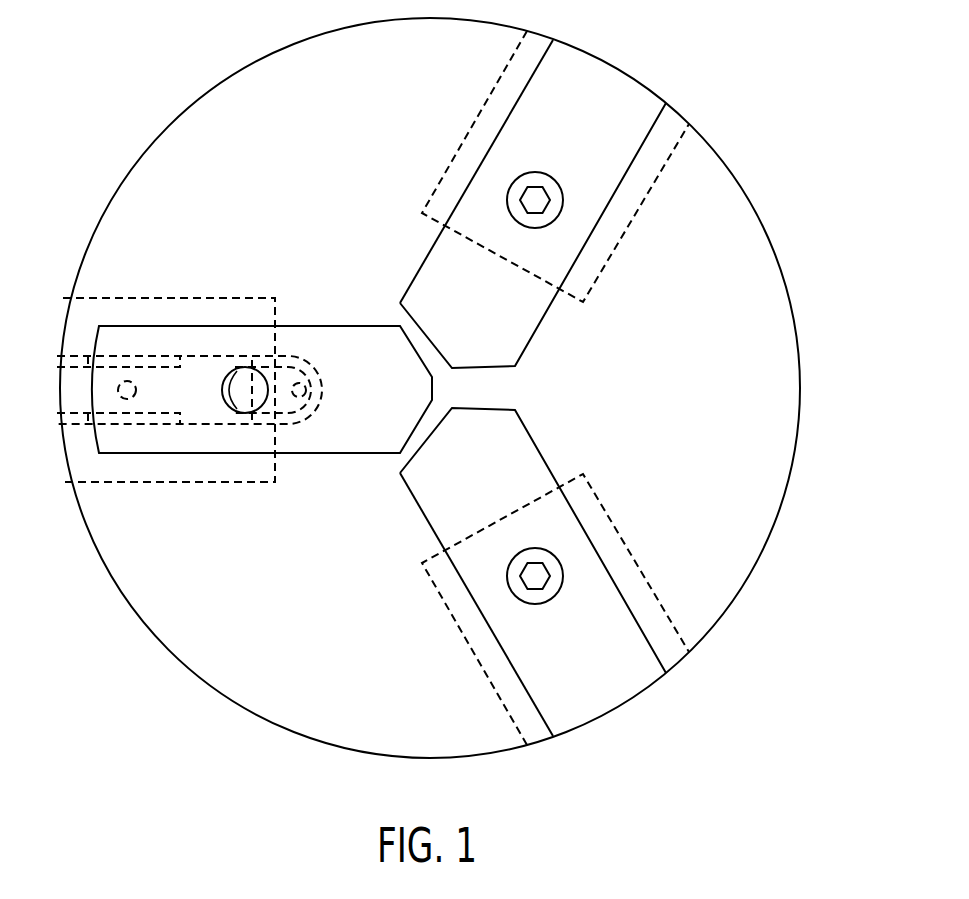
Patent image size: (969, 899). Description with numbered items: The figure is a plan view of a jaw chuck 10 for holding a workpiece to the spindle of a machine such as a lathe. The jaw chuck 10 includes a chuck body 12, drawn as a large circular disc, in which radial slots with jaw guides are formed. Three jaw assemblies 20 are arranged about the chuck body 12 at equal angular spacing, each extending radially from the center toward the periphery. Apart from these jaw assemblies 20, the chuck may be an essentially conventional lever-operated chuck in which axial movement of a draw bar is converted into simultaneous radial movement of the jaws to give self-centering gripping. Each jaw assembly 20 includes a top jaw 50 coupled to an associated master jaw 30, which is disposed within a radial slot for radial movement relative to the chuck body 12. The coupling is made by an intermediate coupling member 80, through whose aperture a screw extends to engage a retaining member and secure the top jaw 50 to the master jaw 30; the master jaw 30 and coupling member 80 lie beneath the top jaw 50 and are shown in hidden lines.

The jaw chuck 10 is at (770, 118).
The chuck body 12 is at (770, 302).
The jaw assembly 20 is at (618, 289).
The master jaw 30 is at (229, 290).
The top jaw 50 is at (345, 320).
The intermediate coupling member 80 is at (80, 345).